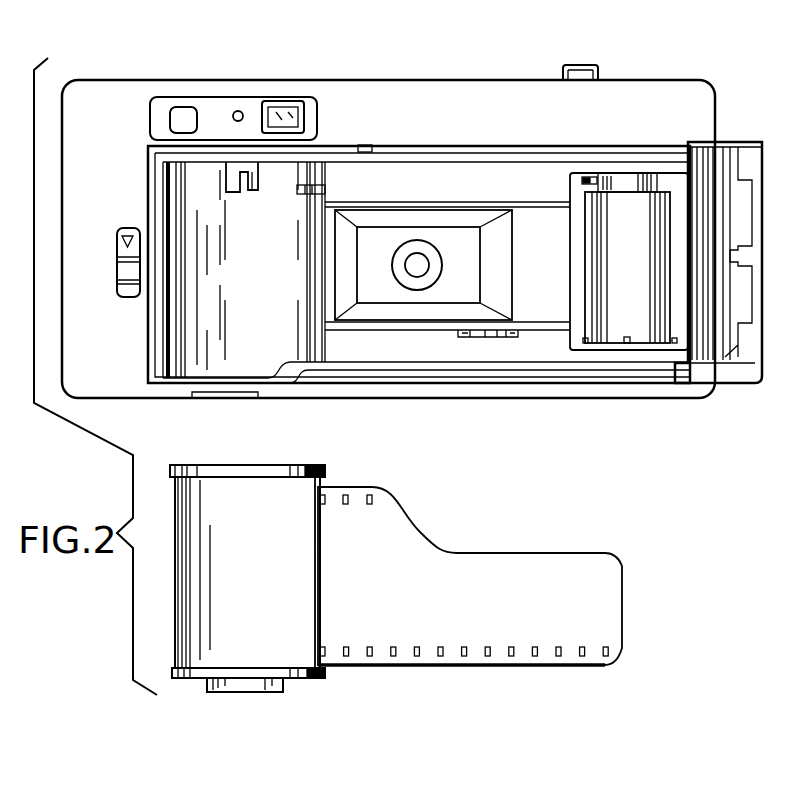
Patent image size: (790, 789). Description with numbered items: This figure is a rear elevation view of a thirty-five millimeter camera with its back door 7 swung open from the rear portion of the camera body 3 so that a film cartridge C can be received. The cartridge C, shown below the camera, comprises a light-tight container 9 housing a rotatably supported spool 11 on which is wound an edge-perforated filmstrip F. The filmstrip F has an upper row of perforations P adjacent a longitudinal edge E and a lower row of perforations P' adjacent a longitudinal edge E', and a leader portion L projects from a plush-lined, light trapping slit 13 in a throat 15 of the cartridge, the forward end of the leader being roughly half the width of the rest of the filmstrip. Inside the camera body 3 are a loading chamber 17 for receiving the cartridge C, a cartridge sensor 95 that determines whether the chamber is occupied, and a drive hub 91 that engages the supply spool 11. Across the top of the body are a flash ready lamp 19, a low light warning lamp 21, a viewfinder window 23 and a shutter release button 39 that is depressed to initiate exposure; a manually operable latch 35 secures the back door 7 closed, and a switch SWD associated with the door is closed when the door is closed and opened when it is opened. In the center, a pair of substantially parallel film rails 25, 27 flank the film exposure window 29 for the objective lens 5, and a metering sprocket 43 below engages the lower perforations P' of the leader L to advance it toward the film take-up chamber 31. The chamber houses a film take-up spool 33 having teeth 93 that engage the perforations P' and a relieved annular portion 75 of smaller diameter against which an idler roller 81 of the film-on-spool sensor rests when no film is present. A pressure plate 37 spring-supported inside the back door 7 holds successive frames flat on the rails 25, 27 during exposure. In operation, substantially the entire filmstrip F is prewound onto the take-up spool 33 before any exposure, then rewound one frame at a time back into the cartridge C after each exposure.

The camera body 3 is at (98, 82).
The objective lens 5 is at (422, 266).
The back door 7 is at (739, 142).
The light-tight container 9 is at (174, 510).
The spool 11 is at (238, 692).
The light trapping slit 13 is at (320, 602).
The throat 15 is at (304, 567).
The loading chamber 17 is at (252, 331).
The flash ready lamp 19 is at (178, 108).
The low light warning lamp 21 is at (237, 112).
The viewfinder window 23 is at (283, 110).
The film rail 25 is at (378, 208).
The film rail 27 is at (423, 323).
The film exposure window 29 is at (382, 297).
The film take-up chamber 31 is at (576, 193).
The film take-up spool 33 is at (592, 244).
The latch 35 is at (117, 238).
The pressure plate 37 is at (705, 203).
The shutter release button 39 is at (580, 65).
The metering sprocket 43 is at (500, 333).
The relieved annular portion 75 is at (623, 181).
The idler roller 81 is at (588, 177).
The drive hub 91 is at (234, 193).
The teeth 93 is at (627, 337).
The cartridge sensor 95 is at (300, 188).
The door switch SWD is at (366, 146).
The film cartridge C is at (173, 686).
The filmstrip F is at (468, 612).
The leader portion L is at (553, 574).
The longitudinal edge E is at (345, 465).
The longitudinal edge E' is at (461, 698).
The perforations P is at (353, 477).
The perforations P' is at (464, 685).